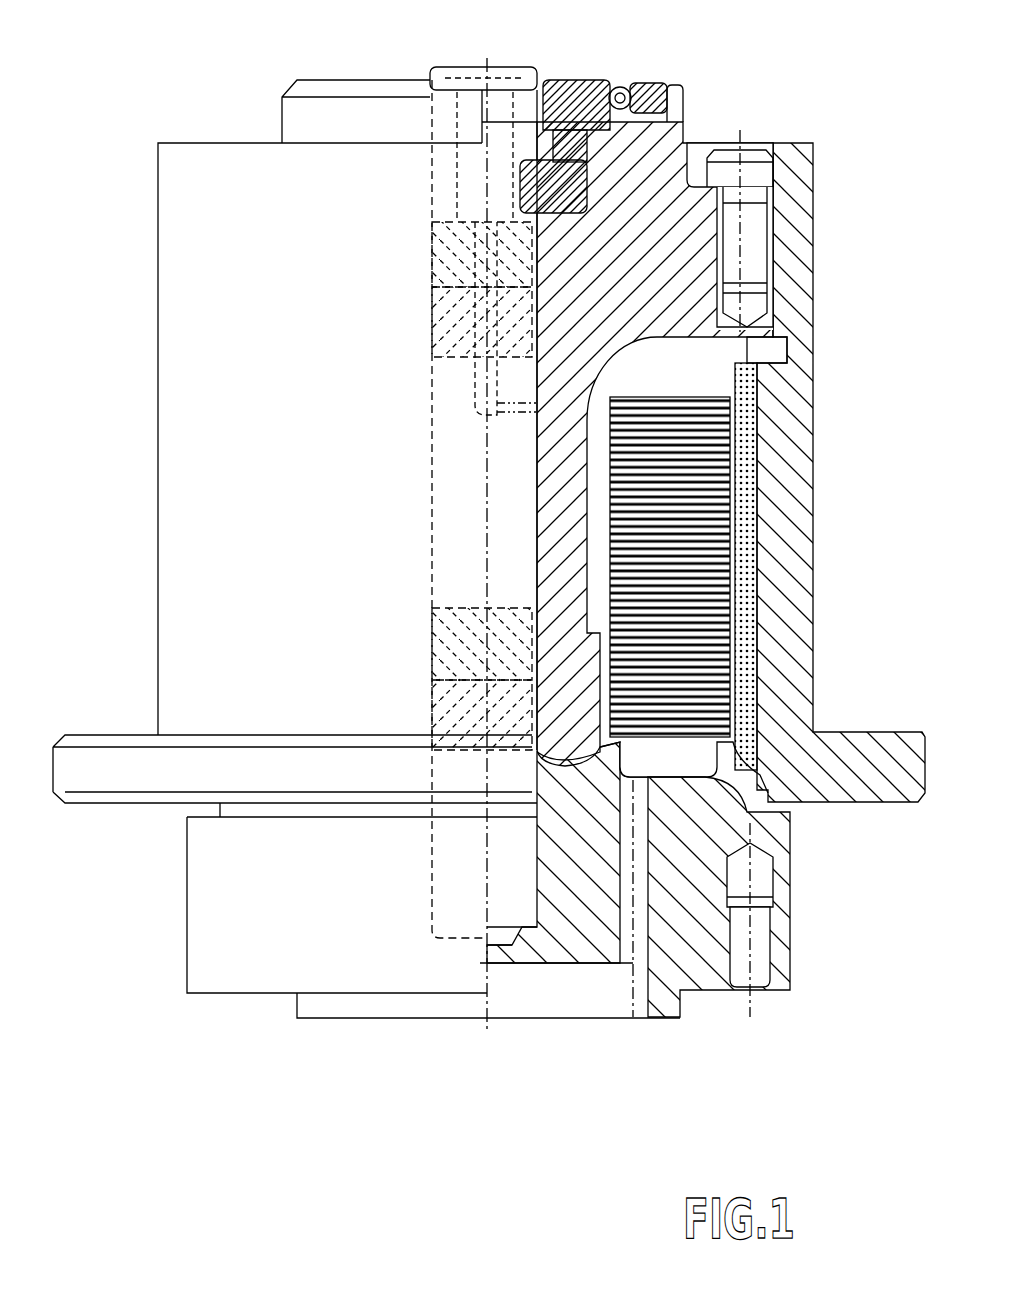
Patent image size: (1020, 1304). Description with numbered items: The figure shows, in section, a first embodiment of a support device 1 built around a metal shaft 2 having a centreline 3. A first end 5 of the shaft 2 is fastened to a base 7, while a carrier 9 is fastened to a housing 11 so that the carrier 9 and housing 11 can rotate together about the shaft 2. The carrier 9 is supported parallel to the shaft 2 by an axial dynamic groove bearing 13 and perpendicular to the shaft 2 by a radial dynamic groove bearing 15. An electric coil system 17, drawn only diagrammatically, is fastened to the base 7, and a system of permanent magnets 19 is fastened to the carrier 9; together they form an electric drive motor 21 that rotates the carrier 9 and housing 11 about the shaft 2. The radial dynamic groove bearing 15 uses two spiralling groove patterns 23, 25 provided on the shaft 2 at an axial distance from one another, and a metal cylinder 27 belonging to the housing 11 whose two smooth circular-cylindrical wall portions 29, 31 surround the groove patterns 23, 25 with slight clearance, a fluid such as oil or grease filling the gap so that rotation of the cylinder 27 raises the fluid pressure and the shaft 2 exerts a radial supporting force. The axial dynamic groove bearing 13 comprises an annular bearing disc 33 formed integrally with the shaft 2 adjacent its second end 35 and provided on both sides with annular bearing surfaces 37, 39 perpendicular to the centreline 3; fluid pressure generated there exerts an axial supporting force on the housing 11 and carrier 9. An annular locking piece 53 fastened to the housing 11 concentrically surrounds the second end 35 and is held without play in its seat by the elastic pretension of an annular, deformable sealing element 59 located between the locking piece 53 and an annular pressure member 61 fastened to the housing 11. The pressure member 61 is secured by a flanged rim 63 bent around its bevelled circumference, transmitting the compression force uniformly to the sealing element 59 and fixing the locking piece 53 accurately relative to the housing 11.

The support device 1 is at (160, 841).
The shaft 2 is at (455, 586).
The centreline 3 is at (487, 902).
The first end 5 is at (448, 856).
The base 7 is at (588, 935).
The carrier 9 is at (185, 522).
The housing 11 is at (690, 125).
The axial dynamic groove bearing 13 is at (512, 185).
The radial dynamic groove bearing 15 is at (412, 341).
The electric coil system 17 is at (693, 450).
The permanent magnets 19 is at (745, 630).
The electric drive motor 21 is at (735, 560).
The spiralling groove pattern 23 is at (432, 262).
The spiralling groove pattern 25 is at (432, 660).
The metal cylinder 27 is at (558, 498).
The circular-cylindrical wall portion 29 is at (540, 287).
The circular-cylindrical wall portion 31 is at (553, 735).
The bearing disc 33 is at (546, 88).
The second end 35 is at (443, 122).
The bearing surface 37 is at (705, 140).
The bearing surface 39 is at (713, 137).
The locking piece 53 is at (571, 80).
The sealing element 59 is at (604, 87).
The pressure member 61 is at (650, 82).
The flanged rim 63 is at (343, 80).